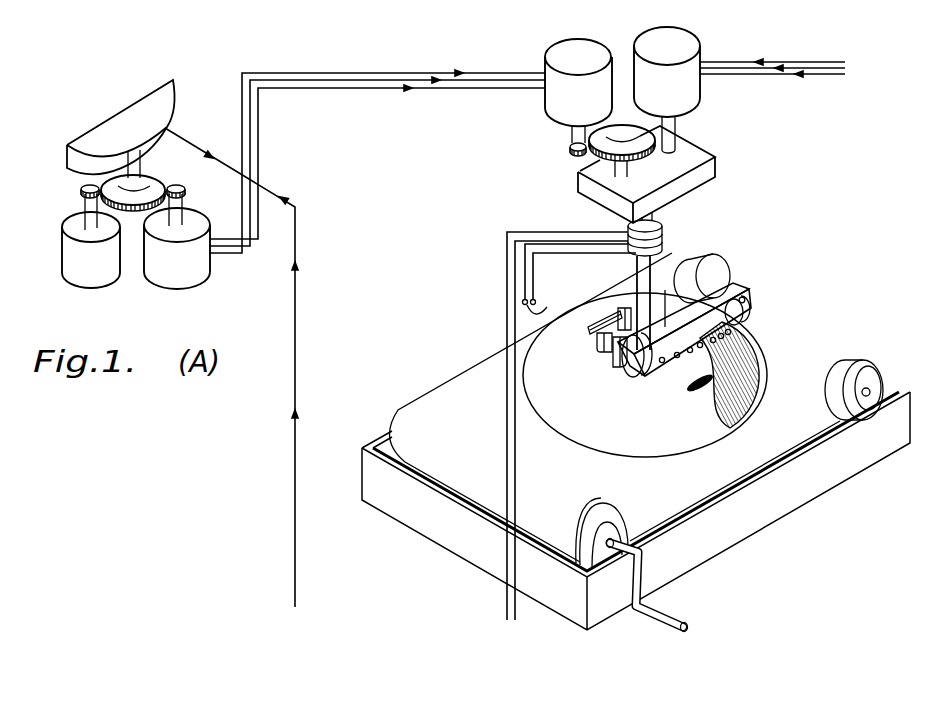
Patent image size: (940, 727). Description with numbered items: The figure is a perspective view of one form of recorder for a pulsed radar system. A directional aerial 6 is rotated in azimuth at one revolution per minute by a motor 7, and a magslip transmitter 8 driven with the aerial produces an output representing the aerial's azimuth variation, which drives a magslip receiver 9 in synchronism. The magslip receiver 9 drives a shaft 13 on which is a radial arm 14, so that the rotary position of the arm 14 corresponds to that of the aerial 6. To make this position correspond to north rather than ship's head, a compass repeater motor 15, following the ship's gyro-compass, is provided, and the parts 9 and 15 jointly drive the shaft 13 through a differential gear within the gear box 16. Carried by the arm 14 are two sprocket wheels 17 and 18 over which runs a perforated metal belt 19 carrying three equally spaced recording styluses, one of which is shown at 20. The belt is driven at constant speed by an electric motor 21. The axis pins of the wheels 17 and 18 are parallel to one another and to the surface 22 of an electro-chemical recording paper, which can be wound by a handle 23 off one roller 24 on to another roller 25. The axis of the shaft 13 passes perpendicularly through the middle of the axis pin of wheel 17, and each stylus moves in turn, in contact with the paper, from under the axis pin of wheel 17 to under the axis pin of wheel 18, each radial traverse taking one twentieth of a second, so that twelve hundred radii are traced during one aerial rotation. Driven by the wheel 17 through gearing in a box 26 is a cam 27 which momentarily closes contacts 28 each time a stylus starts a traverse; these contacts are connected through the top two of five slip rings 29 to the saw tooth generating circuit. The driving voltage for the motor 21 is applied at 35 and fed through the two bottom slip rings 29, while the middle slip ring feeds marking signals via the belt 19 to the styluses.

The directional aerial 6 is at (106, 128).
The motor 7 is at (70, 260).
The magslip transmitter 8 is at (183, 281).
The magslip receiver 9 is at (550, 108).
The shaft 13 is at (643, 290).
The radial arm 14 is at (664, 300).
The compass repeater motor 15 is at (697, 88).
The gear box 16 is at (695, 148).
The sprocket wheel 17 is at (638, 377).
The sprocket wheel 18 is at (742, 315).
The perforated metal belt 19 is at (697, 358).
The recording stylus 20 is at (720, 339).
The electric motor 21 is at (708, 260).
The surface of electro-chemical recording paper 22 is at (657, 472).
The handle 23 is at (668, 615).
The roller 24 is at (817, 397).
The roller 25 is at (625, 514).
The gear box 26 is at (617, 362).
The cam 27 is at (597, 345).
The contacts 28 is at (590, 332).
The slip rings 29 is at (668, 231).
The motor driving voltage terminal 35 is at (545, 308).